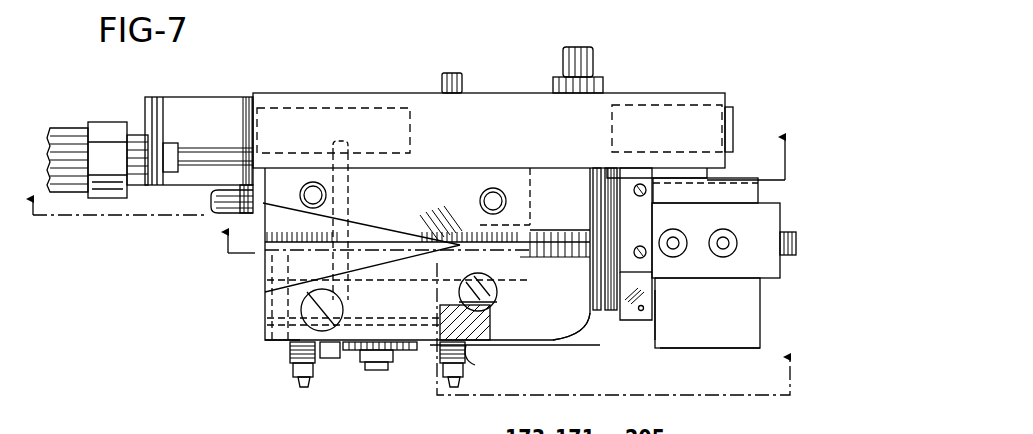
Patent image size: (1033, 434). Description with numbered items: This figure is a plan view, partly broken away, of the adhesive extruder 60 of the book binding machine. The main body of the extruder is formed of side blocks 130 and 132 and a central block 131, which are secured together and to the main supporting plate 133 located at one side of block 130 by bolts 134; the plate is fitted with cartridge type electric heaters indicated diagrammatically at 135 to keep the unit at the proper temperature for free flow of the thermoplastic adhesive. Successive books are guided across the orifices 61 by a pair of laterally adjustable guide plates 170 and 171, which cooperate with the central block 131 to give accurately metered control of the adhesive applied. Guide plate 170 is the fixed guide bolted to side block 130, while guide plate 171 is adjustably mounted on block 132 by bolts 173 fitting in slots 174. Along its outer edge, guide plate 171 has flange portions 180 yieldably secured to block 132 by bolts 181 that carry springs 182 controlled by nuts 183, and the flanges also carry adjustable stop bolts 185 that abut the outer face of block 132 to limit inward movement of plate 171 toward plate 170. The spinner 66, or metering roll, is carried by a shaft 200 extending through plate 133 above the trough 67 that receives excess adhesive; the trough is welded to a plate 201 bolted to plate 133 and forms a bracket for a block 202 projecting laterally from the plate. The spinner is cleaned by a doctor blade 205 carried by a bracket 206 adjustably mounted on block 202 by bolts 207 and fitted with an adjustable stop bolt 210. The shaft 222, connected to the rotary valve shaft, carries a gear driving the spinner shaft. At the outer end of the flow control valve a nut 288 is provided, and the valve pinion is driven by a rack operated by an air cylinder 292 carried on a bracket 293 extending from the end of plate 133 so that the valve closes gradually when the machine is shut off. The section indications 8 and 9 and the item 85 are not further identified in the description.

The air cylinder 292 is at (64, 142).
The bracket 293 is at (194, 113).
The shaft 85 is at (210, 207).
The section line 8- 8 is at (407, 311).
The section line 9- 9 is at (504, 209).
The main supporting plate 133 is at (375, 101).
The extruder 60 is at (334, 80).
The heaters 135 is at (280, 107).
The bolts 134 is at (340, 140).
The shaft 222 is at (448, 72).
The shaft 200 is at (587, 52).
The side block 130 is at (528, 175).
The guide plate 170 is at (480, 172).
The central block 131 is at (530, 240).
The orifices 61 is at (362, 239).
The slots 174 is at (303, 283).
The bolts 173 is at (307, 327).
The guide plate 171 is at (272, 342).
The flange portions 180 is at (463, 350).
The springs 182 is at (290, 360).
The bolts 181 is at (303, 388).
The nuts 183 is at (318, 378).
The nut 288 is at (403, 363).
The adjustable stop bolts 185 is at (475, 348).
The side block 132 is at (520, 305).
The spinner 66 is at (603, 320).
The trough 67 is at (586, 334).
The plate 201 is at (665, 175).
The bolts 207 is at (682, 236).
The adjustable stop bolt 210 is at (790, 257).
The bracket 206 is at (731, 313).
The doctor blade 205 is at (650, 298).
The block 202 is at (731, 340).